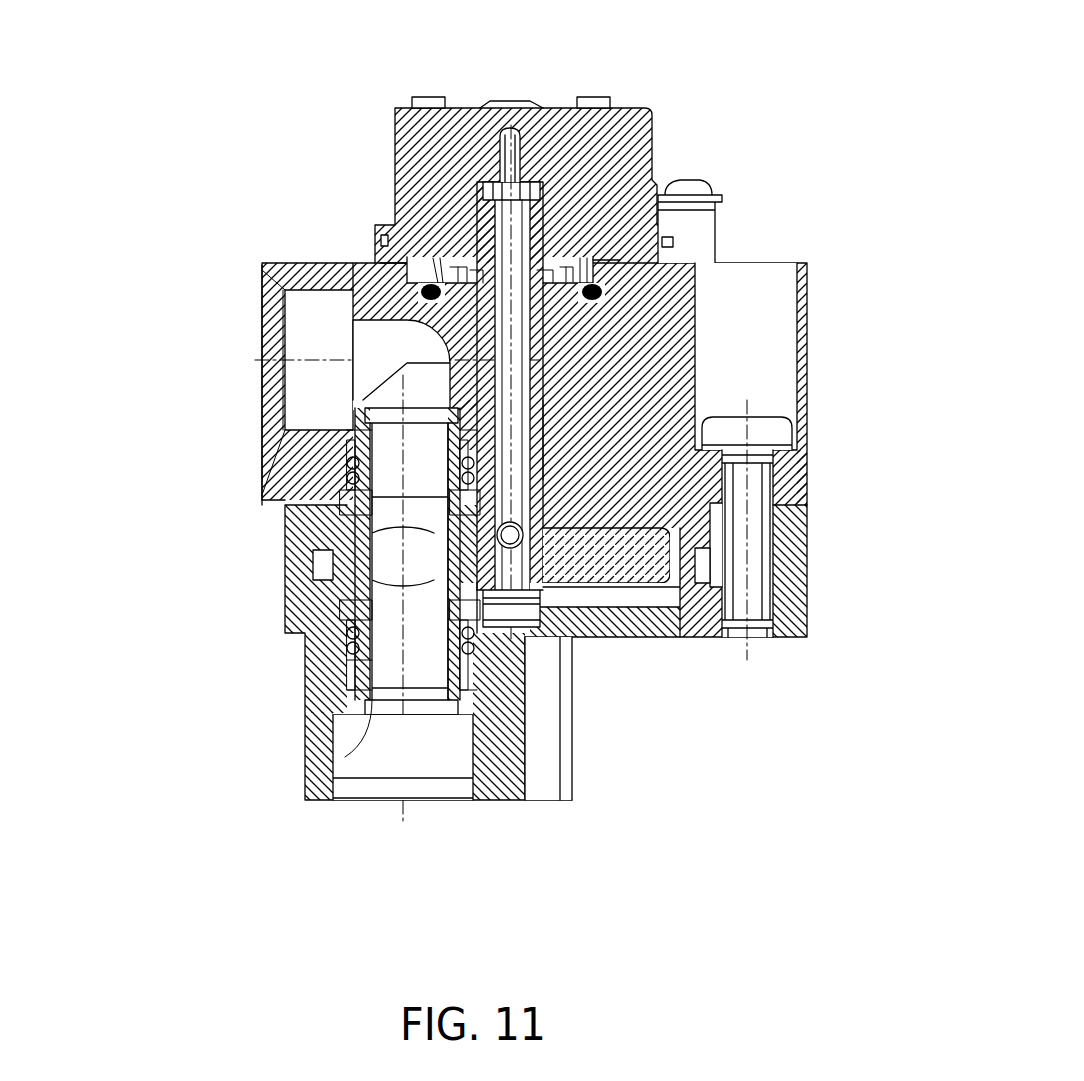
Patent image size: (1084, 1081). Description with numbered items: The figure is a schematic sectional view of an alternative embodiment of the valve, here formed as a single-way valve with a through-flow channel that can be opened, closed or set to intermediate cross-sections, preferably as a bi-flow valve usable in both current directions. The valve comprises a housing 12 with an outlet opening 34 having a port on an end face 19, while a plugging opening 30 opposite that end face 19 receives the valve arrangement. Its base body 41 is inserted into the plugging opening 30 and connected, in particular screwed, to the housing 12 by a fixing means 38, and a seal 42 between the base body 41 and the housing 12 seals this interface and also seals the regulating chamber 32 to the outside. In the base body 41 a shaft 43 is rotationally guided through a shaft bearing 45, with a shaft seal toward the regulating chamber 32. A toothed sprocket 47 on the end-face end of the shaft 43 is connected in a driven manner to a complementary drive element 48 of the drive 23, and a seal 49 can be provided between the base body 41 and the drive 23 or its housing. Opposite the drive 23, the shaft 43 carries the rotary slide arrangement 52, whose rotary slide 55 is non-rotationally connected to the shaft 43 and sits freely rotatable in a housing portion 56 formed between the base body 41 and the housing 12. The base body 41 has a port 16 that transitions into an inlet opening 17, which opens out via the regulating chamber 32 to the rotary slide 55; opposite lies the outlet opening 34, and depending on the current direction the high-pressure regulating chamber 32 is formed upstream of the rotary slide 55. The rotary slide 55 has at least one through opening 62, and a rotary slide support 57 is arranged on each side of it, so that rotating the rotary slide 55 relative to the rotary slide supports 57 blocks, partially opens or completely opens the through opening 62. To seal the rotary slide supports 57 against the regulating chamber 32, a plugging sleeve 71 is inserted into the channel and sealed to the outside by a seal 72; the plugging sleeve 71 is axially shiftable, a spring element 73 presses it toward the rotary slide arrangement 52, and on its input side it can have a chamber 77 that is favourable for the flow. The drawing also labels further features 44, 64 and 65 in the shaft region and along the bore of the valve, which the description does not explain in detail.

The housing 12 is at (287, 548).
The port 16 is at (305, 333).
The inlet opening 17 is at (232, 398).
The end face 19 is at (502, 803).
The drive 23 is at (655, 87).
The plugging opening 30 is at (723, 512).
The regulating chamber 32 is at (420, 395).
The outlet opening 34 is at (366, 757).
The fixing means 38 is at (725, 495).
The base body 41 is at (283, 272).
The seal 42 is at (710, 558).
The shaft 43 is at (490, 210).
The cavity 44 is at (555, 350).
The shaft bearing 45 is at (555, 480).
The toothed sprocket 47 is at (503, 240).
The drive element 48 is at (488, 190).
The seal 49 is at (617, 277).
The rotary slide arrangement 52 is at (720, 448).
The rotary slide 55 is at (658, 562).
The housing portion 56 is at (587, 593).
The rotary slide support 57 is at (293, 545).
The through opening 62 is at (390, 552).
The chamber 64 is at (438, 659).
The spring 65 is at (342, 500).
The plugging sleeve 71 is at (360, 472).
The seal 72 is at (360, 440).
The spring element 73 is at (360, 657).
The chamber 77 is at (345, 757).